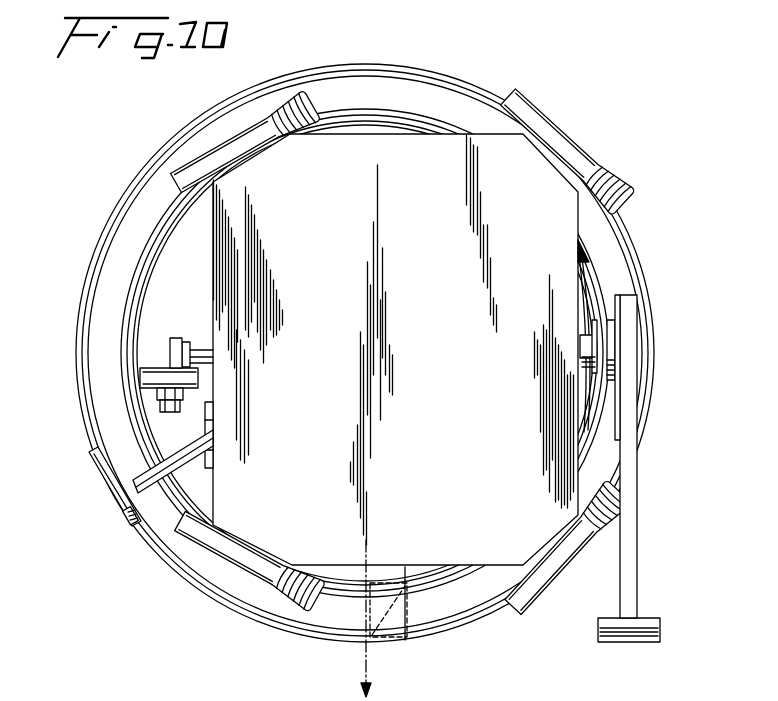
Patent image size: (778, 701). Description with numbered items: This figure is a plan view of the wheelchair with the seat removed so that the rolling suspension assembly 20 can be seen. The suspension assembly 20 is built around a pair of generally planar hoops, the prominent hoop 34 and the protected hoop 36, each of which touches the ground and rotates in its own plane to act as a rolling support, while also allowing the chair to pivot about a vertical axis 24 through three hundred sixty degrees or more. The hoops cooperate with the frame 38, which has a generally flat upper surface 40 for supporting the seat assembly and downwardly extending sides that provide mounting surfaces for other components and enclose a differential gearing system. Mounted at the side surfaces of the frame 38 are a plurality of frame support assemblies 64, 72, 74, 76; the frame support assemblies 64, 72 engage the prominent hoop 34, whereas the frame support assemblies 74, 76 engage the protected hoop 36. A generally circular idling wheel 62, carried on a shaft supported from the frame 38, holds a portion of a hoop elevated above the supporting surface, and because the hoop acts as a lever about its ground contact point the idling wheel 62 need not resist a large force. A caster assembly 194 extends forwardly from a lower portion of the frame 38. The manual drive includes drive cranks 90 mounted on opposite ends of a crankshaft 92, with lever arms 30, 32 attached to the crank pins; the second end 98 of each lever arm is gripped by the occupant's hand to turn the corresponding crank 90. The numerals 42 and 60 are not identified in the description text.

The rolling suspension assembly 20 is at (95, 488).
The vertical axis 24 is at (367, 662).
The lever arm 30 is at (630, 573).
The lever arm 32 is at (160, 408).
The prominent hoop 34 is at (638, 260).
The protected hoop 36 is at (587, 260).
The frame 38 is at (214, 240).
The upper surface 40 is at (240, 510).
The inner ring 42 is at (123, 438).
The coupling 60 is at (596, 381).
The idling wheel 62 is at (122, 517).
The frame support assembly 64 is at (549, 597).
The frame support assembly 72 is at (549, 103).
The frame support assembly 74 is at (188, 164).
The frame support assembly 76 is at (260, 587).
The drive crank 90 is at (174, 352).
The crankshaft 92 is at (196, 350).
The second end of lever arm 98 is at (150, 378).
The caster assembly 194 is at (347, 630).